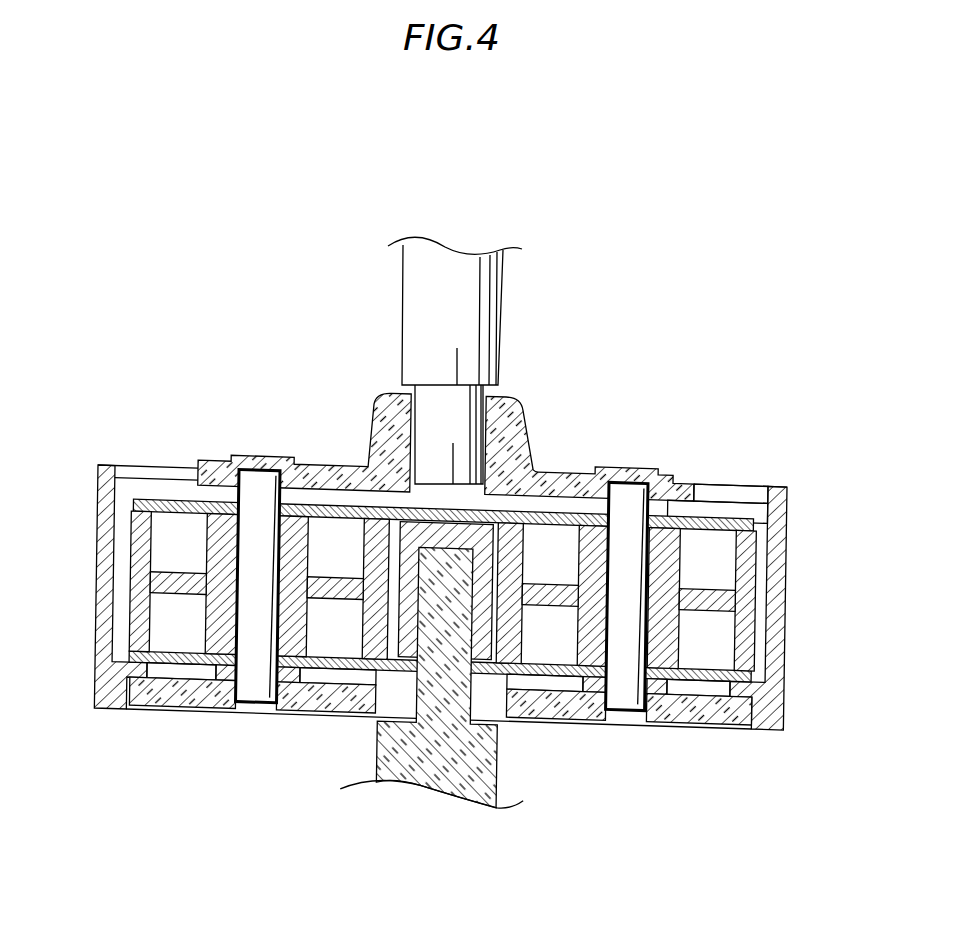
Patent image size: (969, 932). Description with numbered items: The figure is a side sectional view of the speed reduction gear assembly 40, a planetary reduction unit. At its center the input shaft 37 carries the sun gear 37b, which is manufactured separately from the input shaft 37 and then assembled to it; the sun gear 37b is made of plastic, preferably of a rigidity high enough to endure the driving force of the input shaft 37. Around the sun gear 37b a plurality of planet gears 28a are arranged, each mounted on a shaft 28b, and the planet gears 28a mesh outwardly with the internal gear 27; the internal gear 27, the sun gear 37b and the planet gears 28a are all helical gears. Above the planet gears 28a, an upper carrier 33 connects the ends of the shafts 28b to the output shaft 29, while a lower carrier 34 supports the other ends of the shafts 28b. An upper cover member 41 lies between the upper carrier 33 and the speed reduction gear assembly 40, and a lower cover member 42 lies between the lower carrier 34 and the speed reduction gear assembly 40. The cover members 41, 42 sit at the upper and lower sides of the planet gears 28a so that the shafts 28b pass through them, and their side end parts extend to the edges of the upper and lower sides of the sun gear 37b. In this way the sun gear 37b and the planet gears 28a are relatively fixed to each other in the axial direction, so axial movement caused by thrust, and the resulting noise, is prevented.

The internal gear 27 is at (783, 620).
The planet gears 28a is at (668, 553).
The shafts 28b is at (626, 500).
The output shaft 29 is at (487, 292).
The upper carrier 33 is at (527, 418).
The lower carrier 34 is at (665, 708).
The input shaft 37 is at (446, 785).
The sun gear 37b is at (398, 593).
The speed reduction gear assembly 40 is at (469, 622).
The upper cover member 41 is at (157, 500).
The lower cover member 42 is at (160, 633).